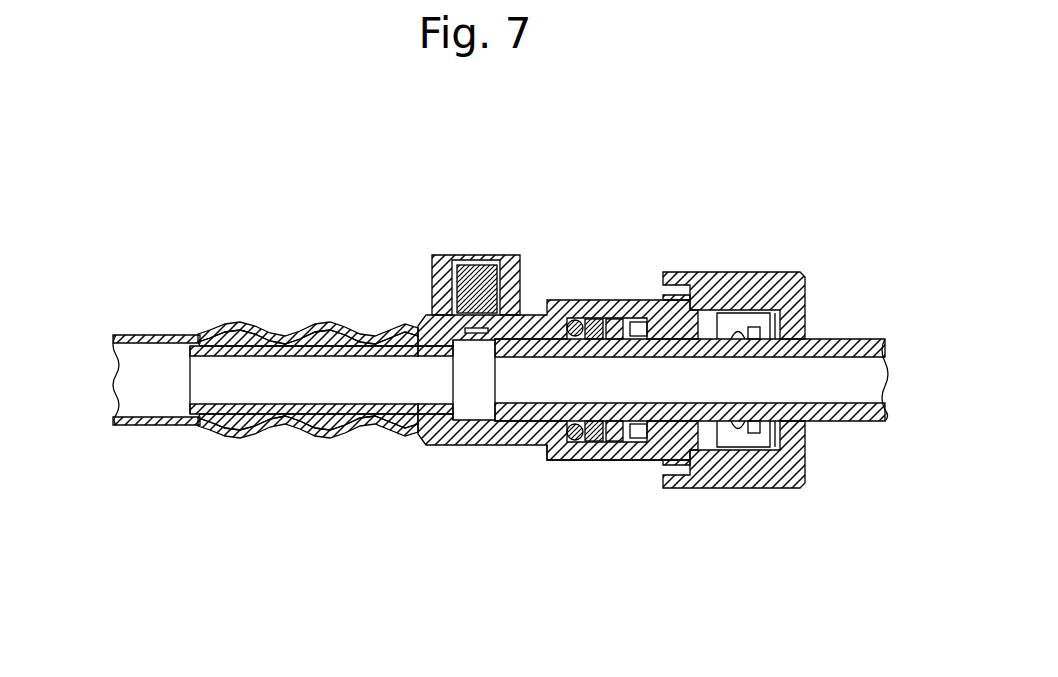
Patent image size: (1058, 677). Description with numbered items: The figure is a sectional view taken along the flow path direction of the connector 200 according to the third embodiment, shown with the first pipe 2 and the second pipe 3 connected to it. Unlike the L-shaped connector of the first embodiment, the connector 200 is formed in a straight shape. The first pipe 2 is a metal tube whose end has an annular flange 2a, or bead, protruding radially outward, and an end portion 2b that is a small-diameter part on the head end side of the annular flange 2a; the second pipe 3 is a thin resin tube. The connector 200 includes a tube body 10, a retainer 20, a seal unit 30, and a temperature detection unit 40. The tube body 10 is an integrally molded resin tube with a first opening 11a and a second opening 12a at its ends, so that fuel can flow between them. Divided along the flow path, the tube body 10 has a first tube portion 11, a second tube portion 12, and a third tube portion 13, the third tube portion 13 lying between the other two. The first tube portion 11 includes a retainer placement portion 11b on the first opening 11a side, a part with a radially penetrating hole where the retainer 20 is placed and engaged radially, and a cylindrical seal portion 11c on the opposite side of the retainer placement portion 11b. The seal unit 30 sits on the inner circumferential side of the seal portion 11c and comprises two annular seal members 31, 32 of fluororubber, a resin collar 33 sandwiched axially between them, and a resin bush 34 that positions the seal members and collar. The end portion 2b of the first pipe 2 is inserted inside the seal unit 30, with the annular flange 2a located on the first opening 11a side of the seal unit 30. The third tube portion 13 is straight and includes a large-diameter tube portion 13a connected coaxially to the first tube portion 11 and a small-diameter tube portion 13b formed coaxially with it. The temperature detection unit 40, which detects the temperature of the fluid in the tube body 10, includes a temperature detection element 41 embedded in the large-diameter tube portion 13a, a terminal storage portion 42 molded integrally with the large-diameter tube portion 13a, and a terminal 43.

The connector 200 is at (800, 217).
The first pipe 2 is at (691, 436).
The annular flange 2a is at (737, 425).
The end portion 2b is at (687, 413).
The second pipe 3 is at (133, 335).
The tube body 10 is at (635, 400).
The first tube portion 11 is at (635, 400).
The first opening 11a is at (803, 318).
The retainer placement portion 11b is at (783, 477).
The seal portion 11c is at (603, 450).
The second tube portion 12 is at (310, 340).
The second opening 12a is at (186, 388).
The third tube portion 13 is at (342, 458).
The large-diameter tube portion 13a is at (483, 427).
The small-diameter tube portion 13b is at (407, 412).
The retainer 20 is at (747, 273).
The seal unit 30 is at (623, 306).
The annular seal member 31 is at (572, 322).
The annular seal member 32 is at (622, 328).
The collar 33 is at (598, 325).
The bush 34 is at (666, 326).
The temperature detection unit 40 is at (459, 238).
The temperature detection element 41 is at (465, 330).
The terminal storage portion 42 is at (440, 262).
The terminal 43 is at (472, 293).